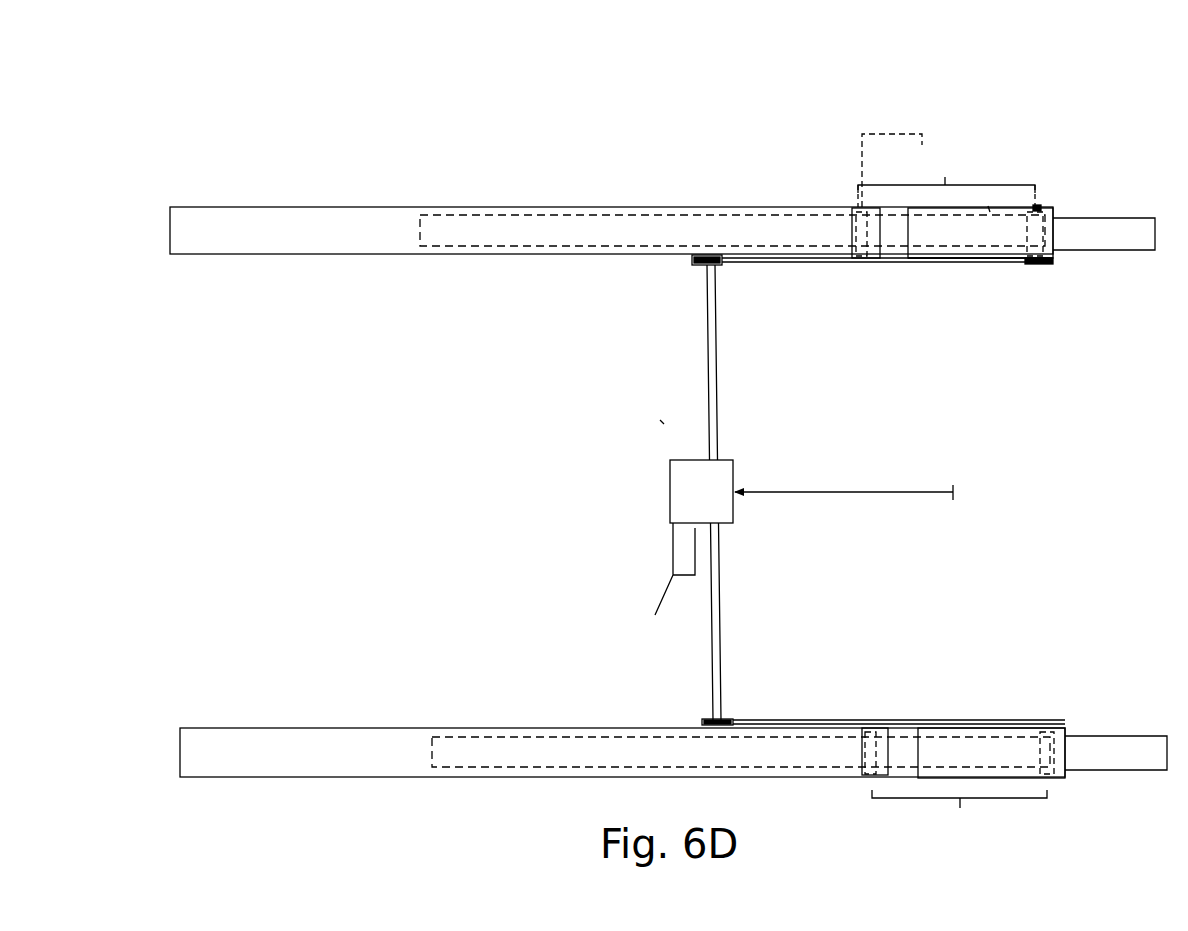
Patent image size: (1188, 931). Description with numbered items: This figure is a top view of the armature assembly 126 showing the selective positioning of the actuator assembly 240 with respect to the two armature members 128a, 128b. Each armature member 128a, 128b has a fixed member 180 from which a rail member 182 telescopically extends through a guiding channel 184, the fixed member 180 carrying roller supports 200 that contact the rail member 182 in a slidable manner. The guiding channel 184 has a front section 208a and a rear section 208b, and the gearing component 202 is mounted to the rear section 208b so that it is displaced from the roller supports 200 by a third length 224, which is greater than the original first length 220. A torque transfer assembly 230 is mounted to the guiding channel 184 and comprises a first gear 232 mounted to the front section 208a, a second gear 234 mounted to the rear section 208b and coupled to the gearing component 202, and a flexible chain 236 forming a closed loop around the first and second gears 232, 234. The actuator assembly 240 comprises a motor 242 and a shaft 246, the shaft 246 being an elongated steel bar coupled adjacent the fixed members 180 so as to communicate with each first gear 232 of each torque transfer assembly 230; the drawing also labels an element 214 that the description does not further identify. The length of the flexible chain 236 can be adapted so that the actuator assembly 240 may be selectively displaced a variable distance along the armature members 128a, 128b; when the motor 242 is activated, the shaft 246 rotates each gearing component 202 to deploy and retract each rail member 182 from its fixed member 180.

The armature assembly 126 is at (692, 150).
The armature member 128a is at (188, 225).
The armature member 128b is at (225, 742).
The fixed member 180 is at (313, 230).
The rail member 182 is at (1127, 228).
The guiding channel 184 is at (990, 210).
The roller supports 200 is at (856, 208).
The gearing component 202 is at (1041, 210).
The front section 208a is at (910, 225).
The rear section 208b is at (1053, 237).
The drive block 214 is at (678, 495).
The first length 220 is at (838, 492).
The third length 224 is at (952, 490).
The torque transfer assembly 230 is at (895, 297).
The first gear 232 is at (692, 262).
The second gear 234 is at (1043, 265).
The flexible chain 236 is at (985, 262).
The actuator assembly 240 is at (660, 420).
The motor 242 is at (661, 589).
The shaft 246 is at (715, 387).